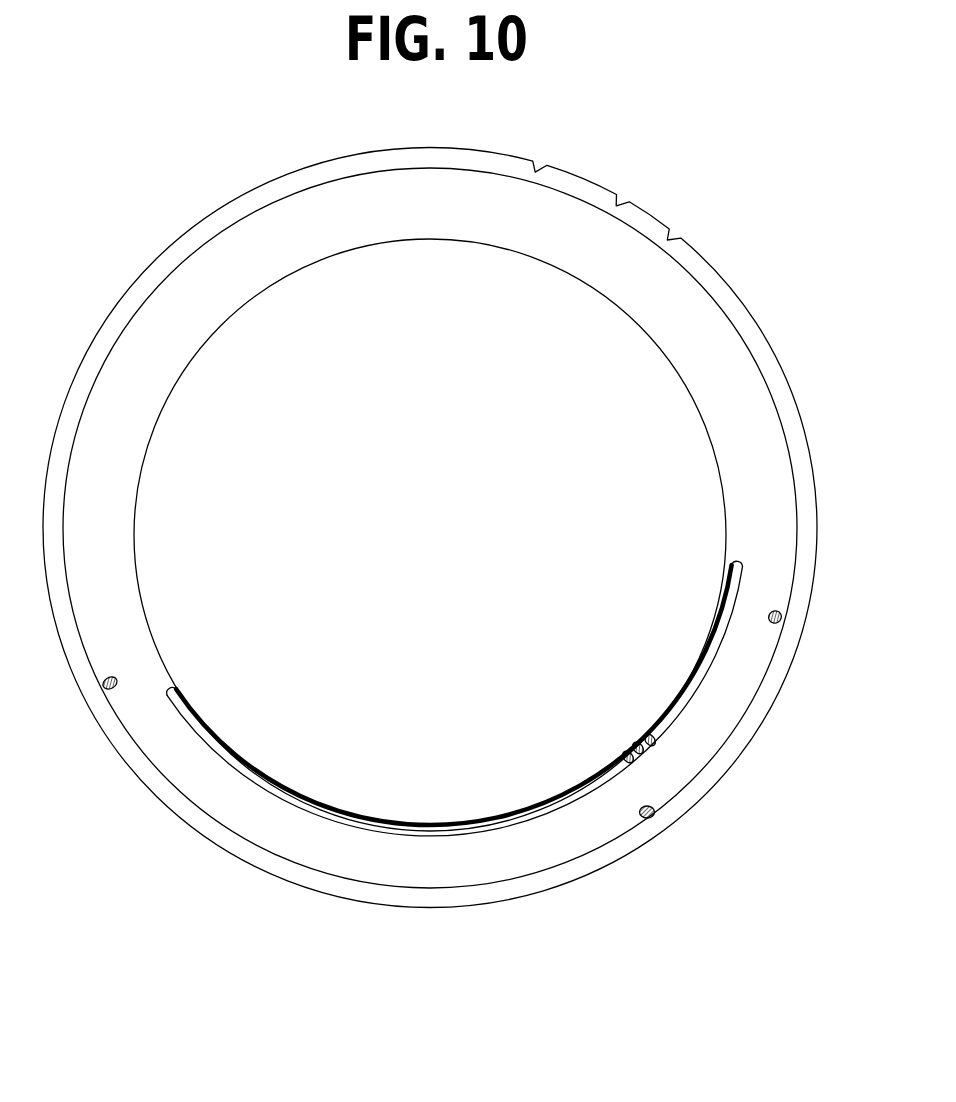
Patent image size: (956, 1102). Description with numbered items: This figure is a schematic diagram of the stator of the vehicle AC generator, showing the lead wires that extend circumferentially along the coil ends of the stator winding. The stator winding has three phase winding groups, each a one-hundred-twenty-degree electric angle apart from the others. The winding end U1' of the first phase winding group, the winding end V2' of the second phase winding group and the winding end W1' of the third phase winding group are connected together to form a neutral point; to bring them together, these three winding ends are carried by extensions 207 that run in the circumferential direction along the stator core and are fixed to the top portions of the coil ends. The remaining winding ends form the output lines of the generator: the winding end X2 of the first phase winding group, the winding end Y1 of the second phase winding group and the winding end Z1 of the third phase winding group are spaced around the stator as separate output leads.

The extensions 207 is at (718, 632).
The winding end X2 is at (106, 690).
The winding end Y1 is at (781, 621).
The winding end Z1 is at (652, 818).
The winding end U1' is at (559, 726).
The winding end W1' is at (587, 690).
The winding end V2' is at (621, 664).